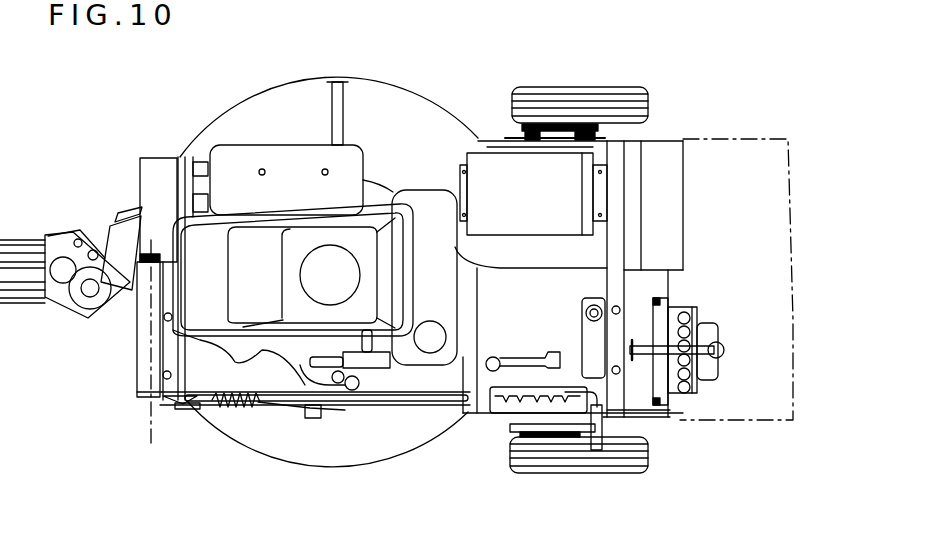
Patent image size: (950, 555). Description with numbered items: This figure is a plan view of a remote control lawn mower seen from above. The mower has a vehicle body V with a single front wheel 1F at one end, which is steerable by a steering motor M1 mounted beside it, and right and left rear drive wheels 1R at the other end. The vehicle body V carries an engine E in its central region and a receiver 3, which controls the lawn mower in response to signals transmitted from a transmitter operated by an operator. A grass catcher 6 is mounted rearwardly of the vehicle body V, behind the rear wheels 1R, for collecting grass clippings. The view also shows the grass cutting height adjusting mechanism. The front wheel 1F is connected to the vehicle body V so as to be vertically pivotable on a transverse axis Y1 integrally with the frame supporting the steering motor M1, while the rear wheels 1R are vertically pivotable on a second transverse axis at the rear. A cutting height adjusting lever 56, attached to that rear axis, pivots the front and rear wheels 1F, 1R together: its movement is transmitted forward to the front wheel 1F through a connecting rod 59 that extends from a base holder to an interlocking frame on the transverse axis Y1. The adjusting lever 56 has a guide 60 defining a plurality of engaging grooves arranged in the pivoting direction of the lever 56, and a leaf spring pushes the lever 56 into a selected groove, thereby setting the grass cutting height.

The vehicle body V is at (278, 92).
The engine E is at (255, 238).
The steering motor M1 is at (118, 230).
The front wheel 1F is at (20, 303).
The transverse axis Y1 is at (156, 364).
The receiver 3 is at (487, 165).
The rear drive wheels 1R is at (583, 88).
The grass catcher 6 is at (752, 137).
The connecting rod 59 is at (415, 406).
The guide 60 is at (492, 395).
The cutting height adjusting lever 56 is at (597, 448).